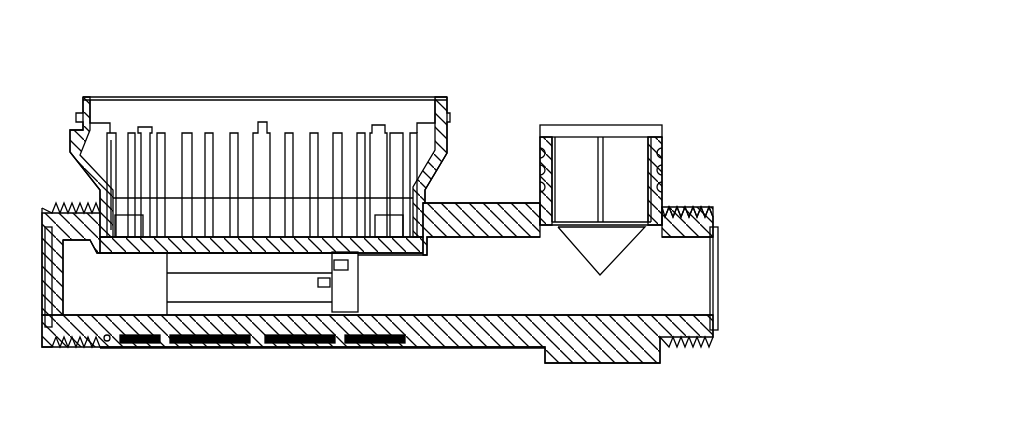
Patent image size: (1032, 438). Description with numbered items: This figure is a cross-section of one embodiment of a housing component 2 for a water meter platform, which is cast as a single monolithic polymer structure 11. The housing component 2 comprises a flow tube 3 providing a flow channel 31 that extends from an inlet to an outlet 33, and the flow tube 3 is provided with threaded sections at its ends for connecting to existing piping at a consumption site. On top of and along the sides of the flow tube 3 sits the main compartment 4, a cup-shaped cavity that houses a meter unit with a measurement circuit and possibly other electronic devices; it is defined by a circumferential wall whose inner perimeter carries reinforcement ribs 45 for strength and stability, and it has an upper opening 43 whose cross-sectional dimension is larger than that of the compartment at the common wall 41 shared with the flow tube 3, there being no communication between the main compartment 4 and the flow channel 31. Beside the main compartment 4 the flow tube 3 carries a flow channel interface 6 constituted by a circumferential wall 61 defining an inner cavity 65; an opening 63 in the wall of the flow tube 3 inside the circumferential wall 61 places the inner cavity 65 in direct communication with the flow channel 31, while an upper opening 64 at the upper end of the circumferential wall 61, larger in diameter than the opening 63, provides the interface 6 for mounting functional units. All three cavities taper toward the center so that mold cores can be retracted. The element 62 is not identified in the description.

The housing component 2 is at (738, 109).
The flow tube 3 is at (440, 343).
The main compartment 4 is at (187, 97).
The flow channel interface 6 is at (580, 132).
The monolithic polymer structure 11 is at (498, 342).
The flow channel 31 is at (534, 284).
The outlet 33 is at (718, 262).
The common wall 41 is at (258, 245).
The upper opening 43 is at (318, 97).
The reinforcement ribs 45 is at (143, 97).
The circumferential wall 61 is at (662, 185).
The insert sleeve 62 is at (537, 137).
The opening 63 is at (712, 232).
The upper opening 64 is at (634, 133).
The inner cavity 65 is at (662, 143).